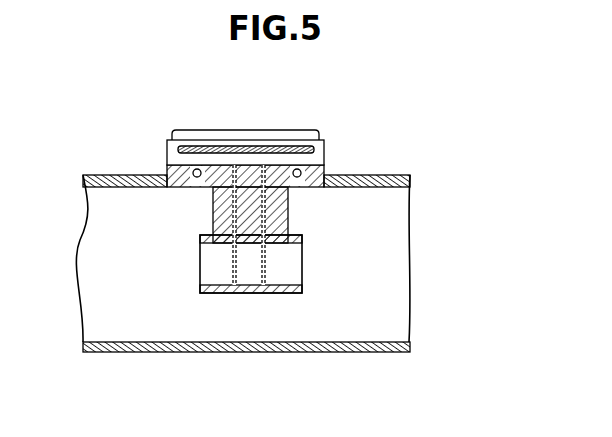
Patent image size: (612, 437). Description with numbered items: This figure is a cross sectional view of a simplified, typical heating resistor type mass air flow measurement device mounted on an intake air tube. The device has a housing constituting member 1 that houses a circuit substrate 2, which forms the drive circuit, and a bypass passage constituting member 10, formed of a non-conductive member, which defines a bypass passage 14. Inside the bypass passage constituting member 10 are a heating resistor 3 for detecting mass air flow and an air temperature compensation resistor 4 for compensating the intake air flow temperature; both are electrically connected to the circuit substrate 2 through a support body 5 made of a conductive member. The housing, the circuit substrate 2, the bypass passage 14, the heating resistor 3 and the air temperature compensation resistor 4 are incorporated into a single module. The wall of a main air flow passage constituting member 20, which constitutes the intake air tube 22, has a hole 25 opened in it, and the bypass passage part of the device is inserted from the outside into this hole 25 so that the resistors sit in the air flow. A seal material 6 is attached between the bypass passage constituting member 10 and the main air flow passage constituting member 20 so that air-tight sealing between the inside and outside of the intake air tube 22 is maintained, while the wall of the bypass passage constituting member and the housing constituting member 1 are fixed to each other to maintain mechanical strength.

The housing constituting member 1 is at (200, 129).
The circuit substrate 2 is at (247, 146).
The heating resistor 3 is at (232, 260).
The air temperature compensation resistor 4 is at (267, 253).
The support body 5 is at (262, 285).
The seal material 6 is at (298, 172).
The bypass passage constituting member 10 is at (278, 293).
The bypass passage 14 is at (293, 267).
The main air flow passage constituting member 20 is at (377, 177).
The intake air tube 22 is at (120, 200).
The hole 25 is at (295, 190).